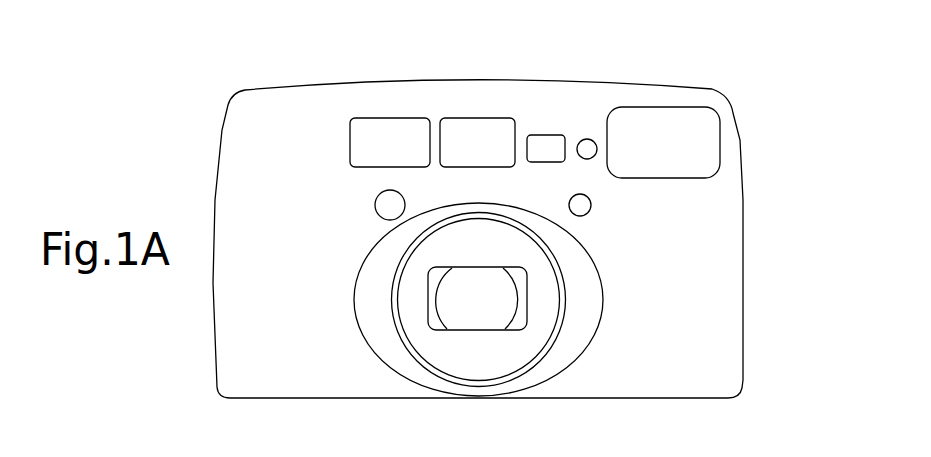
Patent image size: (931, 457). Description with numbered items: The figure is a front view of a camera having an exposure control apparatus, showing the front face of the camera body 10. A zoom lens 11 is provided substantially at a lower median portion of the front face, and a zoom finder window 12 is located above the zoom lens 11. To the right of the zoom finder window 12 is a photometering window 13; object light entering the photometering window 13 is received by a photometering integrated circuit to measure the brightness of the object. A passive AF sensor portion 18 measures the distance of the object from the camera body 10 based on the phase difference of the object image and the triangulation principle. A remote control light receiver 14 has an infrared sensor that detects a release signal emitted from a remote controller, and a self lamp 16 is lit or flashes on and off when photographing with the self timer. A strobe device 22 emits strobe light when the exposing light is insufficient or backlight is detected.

The camera body 10 is at (747, 322).
The zoom lens 11 is at (567, 352).
The zoom finder window 12 is at (480, 118).
The photometering window 13 is at (543, 133).
The remote control light receiver 14 is at (591, 207).
The self lamp 16 is at (590, 138).
The passive AF sensor portion 18 is at (386, 118).
The strobe device 22 is at (722, 142).